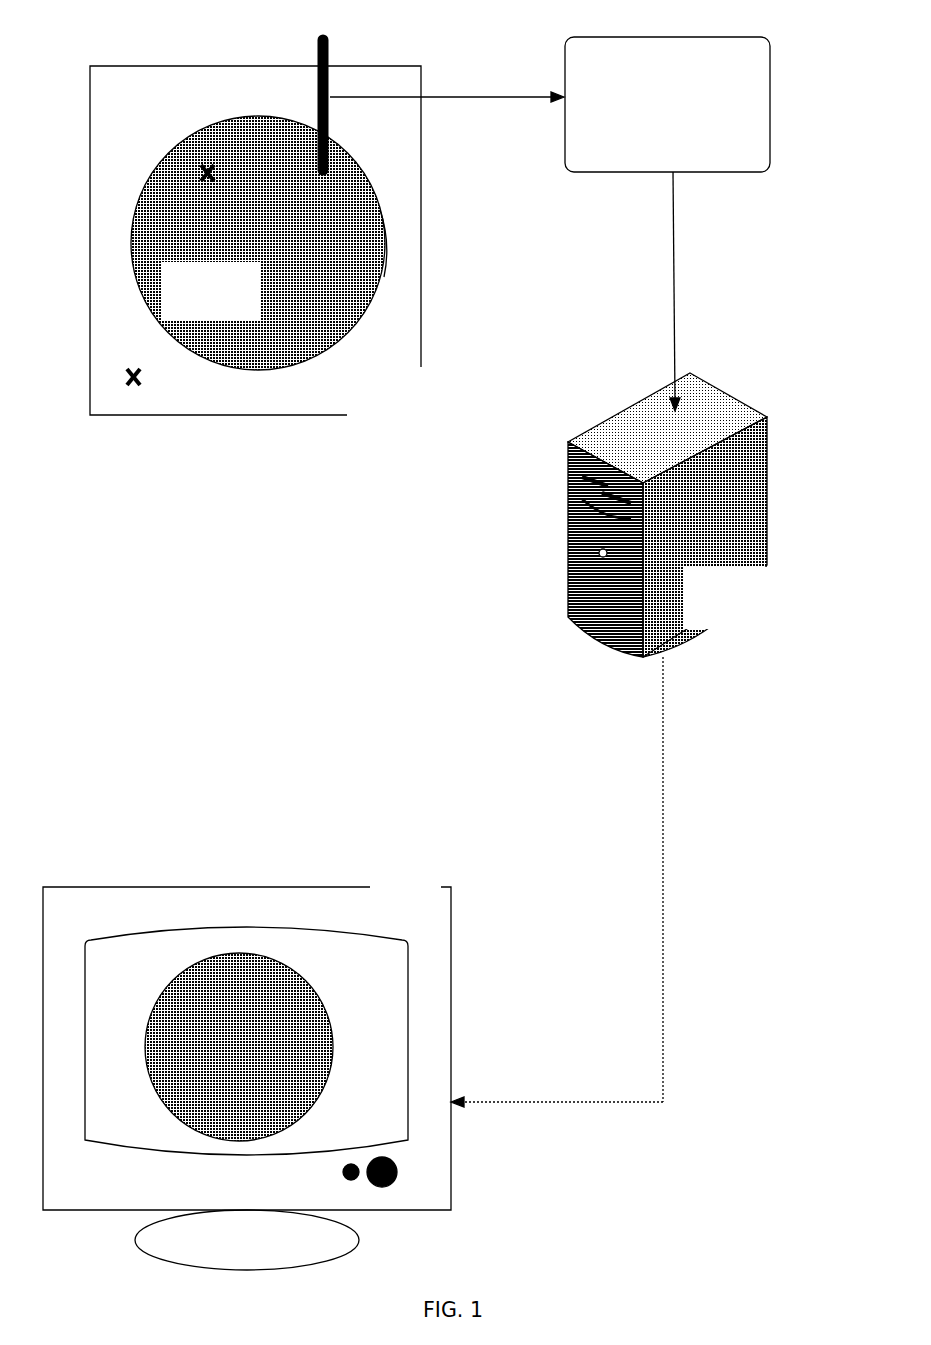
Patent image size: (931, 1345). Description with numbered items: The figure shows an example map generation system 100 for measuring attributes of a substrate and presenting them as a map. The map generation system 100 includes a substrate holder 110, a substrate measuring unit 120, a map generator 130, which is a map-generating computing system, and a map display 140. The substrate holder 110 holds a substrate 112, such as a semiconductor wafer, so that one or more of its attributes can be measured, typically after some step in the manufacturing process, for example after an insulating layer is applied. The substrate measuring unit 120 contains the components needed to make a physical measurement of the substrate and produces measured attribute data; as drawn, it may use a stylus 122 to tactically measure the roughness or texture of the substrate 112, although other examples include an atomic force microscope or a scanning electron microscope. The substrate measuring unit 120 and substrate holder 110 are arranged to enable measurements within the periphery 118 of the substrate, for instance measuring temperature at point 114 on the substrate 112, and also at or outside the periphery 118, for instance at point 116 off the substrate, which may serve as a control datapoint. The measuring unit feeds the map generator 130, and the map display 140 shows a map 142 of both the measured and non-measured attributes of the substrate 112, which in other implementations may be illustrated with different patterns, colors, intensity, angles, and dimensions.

The map generation system 100 is at (441, 635).
The substrate holder 110 is at (267, 261).
The substrate 112 is at (258, 243).
The point 114 is at (208, 168).
The point 116 is at (137, 387).
The periphery 118 is at (385, 277).
The substrate measuring unit 120 is at (667, 104).
The stylus 122 is at (318, 53).
The map generator 130 is at (704, 515).
The map display 140 is at (247, 1062).
The map 142 is at (215, 960).